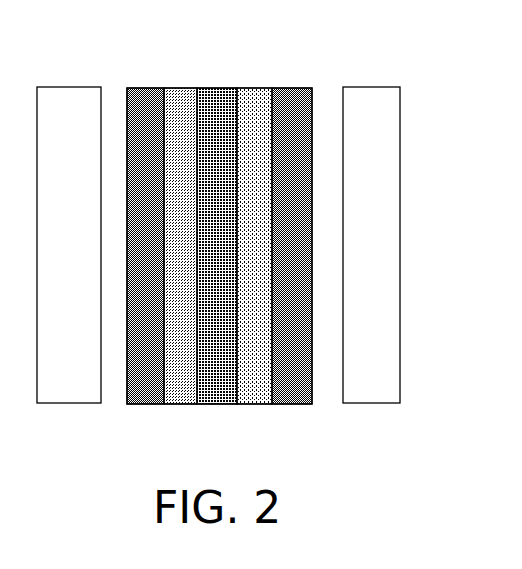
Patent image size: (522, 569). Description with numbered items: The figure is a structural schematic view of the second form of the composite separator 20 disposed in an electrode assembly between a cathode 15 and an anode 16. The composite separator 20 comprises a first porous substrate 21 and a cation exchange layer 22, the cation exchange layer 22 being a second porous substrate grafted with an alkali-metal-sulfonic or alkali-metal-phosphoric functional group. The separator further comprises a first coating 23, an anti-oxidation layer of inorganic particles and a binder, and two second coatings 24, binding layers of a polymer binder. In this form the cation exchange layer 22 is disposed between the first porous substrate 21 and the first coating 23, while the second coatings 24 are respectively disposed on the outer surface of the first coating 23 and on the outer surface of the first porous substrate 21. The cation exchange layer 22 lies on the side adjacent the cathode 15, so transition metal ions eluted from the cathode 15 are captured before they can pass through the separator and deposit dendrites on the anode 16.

The cathode 15 is at (61, 253).
The anode 16 is at (364, 256).
The composite separator 20 is at (219, 238).
The first porous substrate 21 is at (255, 88).
The cation exchange layer 22 is at (217, 88).
The first coating 23 is at (182, 88).
The second coating 24 is at (288, 87).